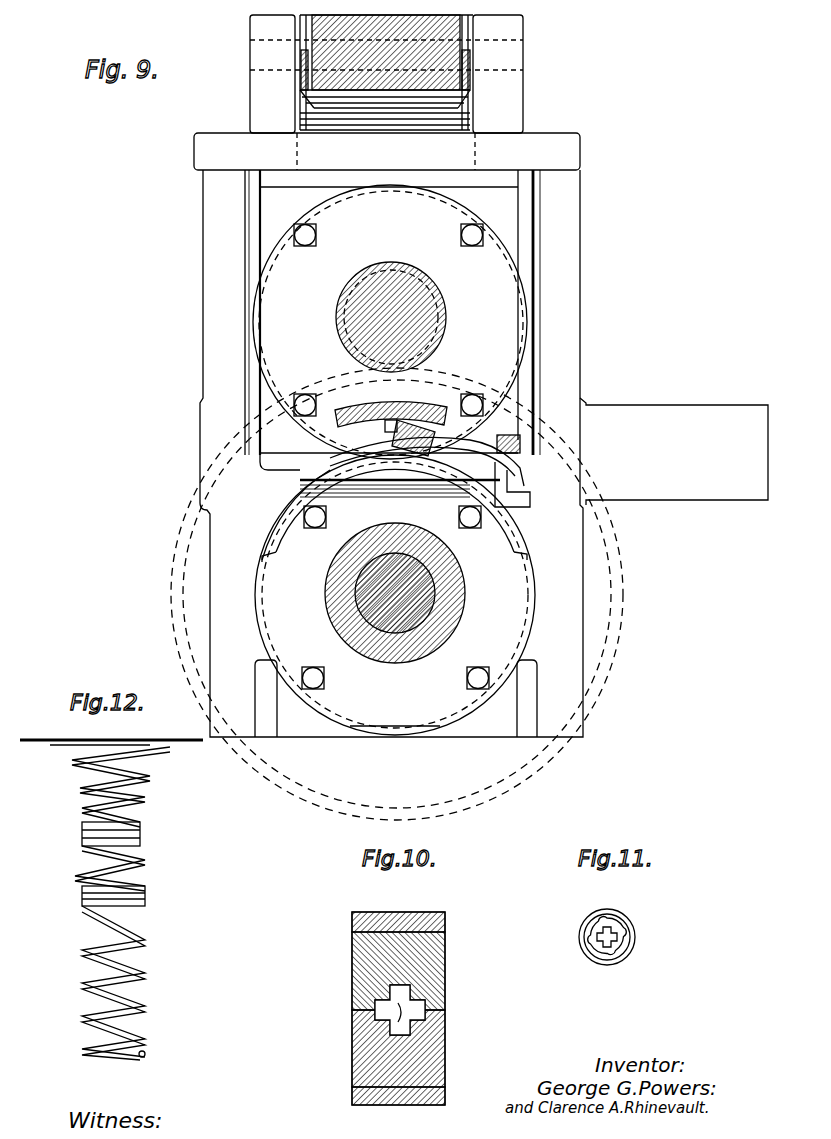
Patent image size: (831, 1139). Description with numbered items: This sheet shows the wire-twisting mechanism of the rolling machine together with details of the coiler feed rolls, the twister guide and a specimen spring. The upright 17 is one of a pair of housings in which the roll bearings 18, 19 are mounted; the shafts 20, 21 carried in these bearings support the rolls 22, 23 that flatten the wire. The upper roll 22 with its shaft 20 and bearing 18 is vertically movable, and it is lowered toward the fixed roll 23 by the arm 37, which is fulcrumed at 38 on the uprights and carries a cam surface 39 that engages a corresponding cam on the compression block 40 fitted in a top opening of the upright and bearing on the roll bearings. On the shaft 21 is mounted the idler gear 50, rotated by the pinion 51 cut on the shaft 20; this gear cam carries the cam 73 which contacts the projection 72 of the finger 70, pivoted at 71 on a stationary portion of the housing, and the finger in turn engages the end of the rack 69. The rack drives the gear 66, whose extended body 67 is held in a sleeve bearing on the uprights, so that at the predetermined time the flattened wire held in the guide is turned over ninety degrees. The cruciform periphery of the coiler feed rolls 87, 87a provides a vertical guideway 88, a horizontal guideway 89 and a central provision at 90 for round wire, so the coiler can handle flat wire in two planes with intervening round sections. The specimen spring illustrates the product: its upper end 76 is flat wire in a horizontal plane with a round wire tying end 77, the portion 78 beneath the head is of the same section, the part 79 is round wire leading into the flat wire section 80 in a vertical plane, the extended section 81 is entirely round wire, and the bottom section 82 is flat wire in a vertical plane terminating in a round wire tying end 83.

In FIG. 9, the upright 17 is at (570, 354).
In FIG. 9, the roll bearing 18 is at (505, 219).
In FIG. 9, the roll bearing 19 is at (518, 612).
In FIG. 9, the shaft 20 is at (378, 272).
In FIG. 9, the shaft 21 is at (365, 605).
In FIG. 9, the roll 22 is at (398, 183).
In FIG. 9, the roll 23 is at (395, 565).
In FIG. 9, the arm 37 is at (458, 57).
In FIG. 9, the fulcrum 38 is at (274, 66).
In FIG. 9, the cam surface 39 is at (418, 108).
In FIG. 9, the compression block 40 is at (400, 122).
In FIG. 9, the idler gear 50 is at (620, 595).
In FIG. 9, the pinion 51 is at (447, 330).
In FIG. 11, the gear 66 is at (612, 922).
In FIG. 11, the extended body 67 is at (605, 918).
In FIG. 9, the rack 69 is at (505, 446).
In FIG. 9, the finger 70 is at (452, 458).
In FIG. 9, the pivot 71 is at (414, 458).
In FIG. 9, the projection 72 is at (391, 452).
In FIG. 9, the cam 73 is at (348, 450).
In FIG. 12, the upper end 76 is at (195, 742).
In FIG. 12, the round wire tying end 77 is at (125, 740).
In FIG. 12, the portion beneath the head 78 is at (148, 777).
In FIG. 12, the round wire part 79 is at (78, 788).
In FIG. 12, the flat wire section 80 is at (140, 810).
In FIG. 12, the round wire section 81 is at (142, 840).
In FIG. 12, the bottom section 82 is at (150, 940).
In FIG. 12, the round wire tying end 83 is at (145, 1057).
In FIG. 10, the feed roll 87 is at (432, 968).
In FIG. 10, the feed roll 87a is at (436, 1094).
In FIG. 10, the vertical guideway 88 is at (393, 992).
In FIG. 10, the horizontal guideway 89 is at (372, 1028).
In FIG. 10, the center provision for round wire 90 is at (408, 1018).